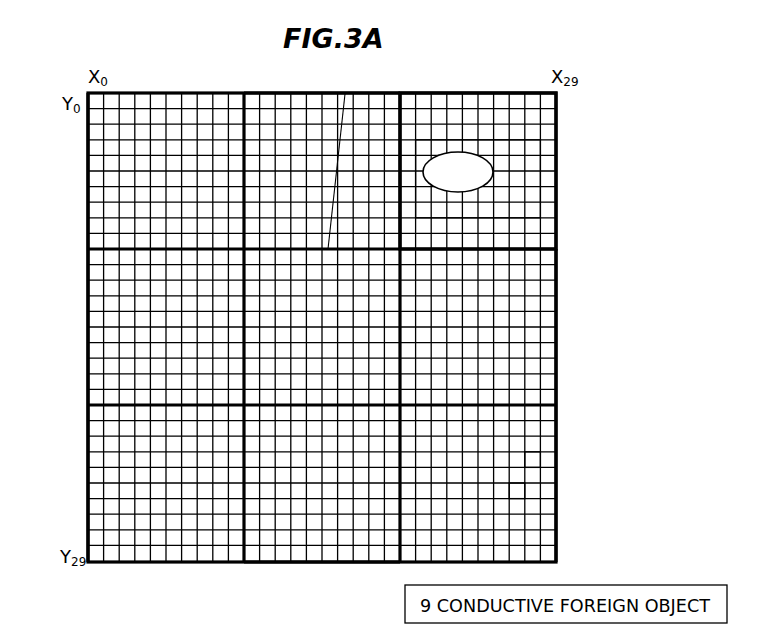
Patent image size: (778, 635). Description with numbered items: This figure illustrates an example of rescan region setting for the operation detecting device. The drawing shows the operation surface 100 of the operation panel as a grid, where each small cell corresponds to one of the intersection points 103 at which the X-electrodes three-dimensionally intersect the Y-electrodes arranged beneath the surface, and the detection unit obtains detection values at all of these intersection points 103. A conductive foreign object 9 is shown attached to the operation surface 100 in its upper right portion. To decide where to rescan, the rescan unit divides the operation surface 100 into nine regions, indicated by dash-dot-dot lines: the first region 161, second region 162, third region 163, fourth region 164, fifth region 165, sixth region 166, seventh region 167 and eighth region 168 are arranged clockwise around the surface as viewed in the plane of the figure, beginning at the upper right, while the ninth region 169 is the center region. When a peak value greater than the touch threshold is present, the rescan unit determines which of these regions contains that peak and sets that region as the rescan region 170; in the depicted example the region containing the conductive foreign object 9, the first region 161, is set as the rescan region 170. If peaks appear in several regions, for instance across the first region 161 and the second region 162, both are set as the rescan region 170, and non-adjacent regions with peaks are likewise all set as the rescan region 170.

The operation surface 100 is at (562, 105).
The conductive foreign object 9 is at (465, 177).
The first region 161 is at (556, 197).
The rescan region 170 is at (535, 210).
The second region 162 is at (556, 290).
The third region 163 is at (557, 457).
The fourth region 164 is at (332, 562).
The fifth region 165 is at (88, 460).
The sixth region 166 is at (88, 302).
The seventh region 167 is at (88, 150).
The eighth region 168 is at (308, 92).
The ninth region 169 is at (345, 94).
The intersection points 103 is at (527, 498).